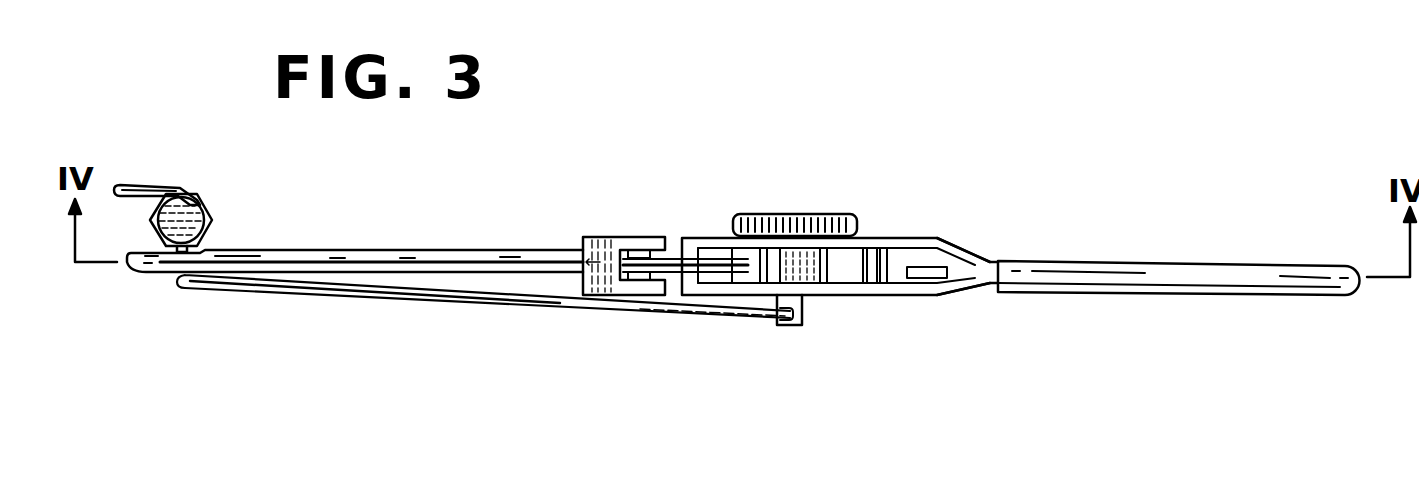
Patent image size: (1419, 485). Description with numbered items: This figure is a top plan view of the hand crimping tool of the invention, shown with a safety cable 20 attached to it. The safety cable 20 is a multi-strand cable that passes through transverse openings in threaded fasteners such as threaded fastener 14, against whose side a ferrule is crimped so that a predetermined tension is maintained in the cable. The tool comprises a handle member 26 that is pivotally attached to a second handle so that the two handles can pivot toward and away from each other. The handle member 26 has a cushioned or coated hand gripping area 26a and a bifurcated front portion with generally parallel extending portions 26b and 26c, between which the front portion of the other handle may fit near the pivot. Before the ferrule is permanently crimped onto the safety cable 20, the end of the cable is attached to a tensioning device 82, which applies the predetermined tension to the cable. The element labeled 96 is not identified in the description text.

The threaded fastener 14 is at (483, 474).
The safety cable 20 is at (627, 312).
The handle member 26 is at (1021, 281).
The hand gripping area 26a is at (1235, 270).
The parallel extending portion 26b is at (900, 247).
The parallel extending portion 26c is at (883, 290).
The tensioning device 82 is at (809, 306).
The knurled adjustment knob 96 is at (801, 213).